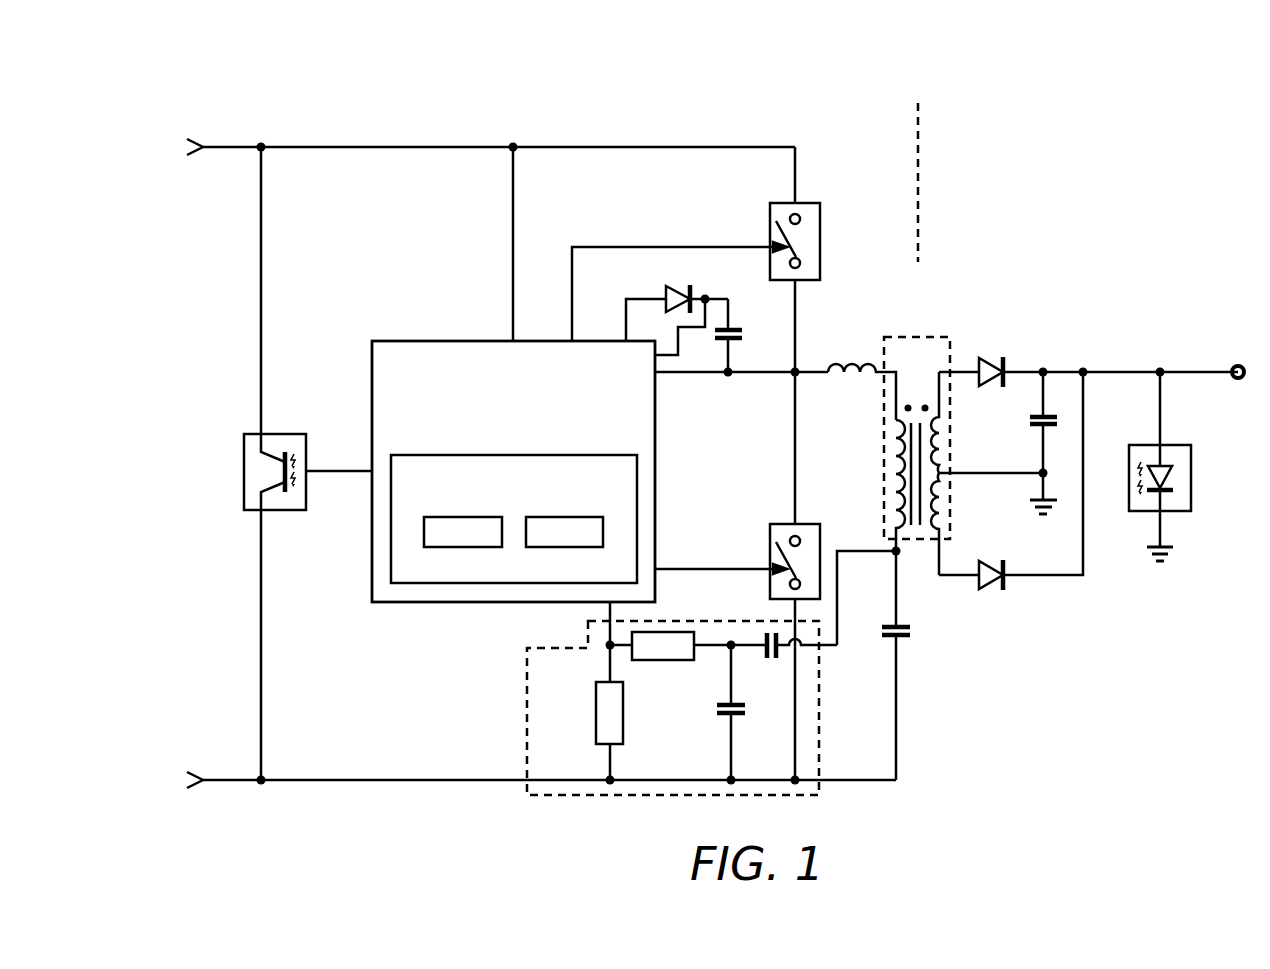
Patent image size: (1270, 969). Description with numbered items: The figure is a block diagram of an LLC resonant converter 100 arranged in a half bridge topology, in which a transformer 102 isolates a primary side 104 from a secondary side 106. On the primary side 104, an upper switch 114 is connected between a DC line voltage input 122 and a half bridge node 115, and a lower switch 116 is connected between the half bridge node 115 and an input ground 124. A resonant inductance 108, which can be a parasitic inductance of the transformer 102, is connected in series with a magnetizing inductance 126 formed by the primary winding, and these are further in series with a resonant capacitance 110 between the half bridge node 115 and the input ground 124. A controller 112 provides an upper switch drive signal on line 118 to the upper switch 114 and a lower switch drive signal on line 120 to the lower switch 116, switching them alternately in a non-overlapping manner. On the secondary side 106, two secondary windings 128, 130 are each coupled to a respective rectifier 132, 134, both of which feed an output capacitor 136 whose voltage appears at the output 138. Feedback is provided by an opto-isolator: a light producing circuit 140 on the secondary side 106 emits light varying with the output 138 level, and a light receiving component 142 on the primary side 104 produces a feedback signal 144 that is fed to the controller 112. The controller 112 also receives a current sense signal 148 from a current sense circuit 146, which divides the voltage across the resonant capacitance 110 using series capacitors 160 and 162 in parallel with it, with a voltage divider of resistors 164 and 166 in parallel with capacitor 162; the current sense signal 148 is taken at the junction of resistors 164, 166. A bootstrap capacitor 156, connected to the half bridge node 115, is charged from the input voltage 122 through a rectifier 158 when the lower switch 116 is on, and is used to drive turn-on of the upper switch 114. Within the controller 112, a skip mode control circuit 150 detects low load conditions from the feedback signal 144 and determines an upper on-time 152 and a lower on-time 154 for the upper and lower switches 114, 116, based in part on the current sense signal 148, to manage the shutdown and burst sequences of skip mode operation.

The LLC resonant converter 100 is at (963, 124).
The transformer 102 is at (912, 337).
The primary side 104 is at (848, 141).
The secondary side 106 is at (989, 144).
The resonant inductance 108 is at (856, 363).
The resonant capacitance 110 is at (906, 638).
The controller 112 is at (386, 340).
The upper switch 114 is at (820, 242).
The half bridge node 115 is at (797, 372).
The lower switch 116 is at (821, 533).
The line 118 is at (677, 246).
The line 120 is at (714, 567).
The DC line voltage input 122 is at (223, 146).
The input ground 124 is at (223, 779).
The magnetizing inductance 126 is at (893, 468).
The secondary winding 128 is at (942, 410).
The secondary winding 130 is at (944, 503).
The rectifier 132 is at (988, 357).
The rectifier 134 is at (986, 590).
The output capacitor 136 is at (1052, 416).
The output 138 is at (1197, 371).
The light producing circuit 140 is at (1191, 477).
The light receiving component 142 is at (244, 470).
The feedback signal 144 is at (338, 470).
The current sense circuit 146 is at (620, 796).
The current sense signal 148 is at (609, 667).
The skip mode control circuit 150 is at (430, 454).
The upper on-time 152 is at (463, 548).
The lower on-time 154 is at (565, 548).
The bootstrap capacitor 156 is at (741, 330).
The rectifier 158 is at (692, 286).
The capacitor 160 is at (778, 660).
The capacitor 162 is at (722, 711).
The resistor 164 is at (663, 661).
The resistor 166 is at (596, 714).